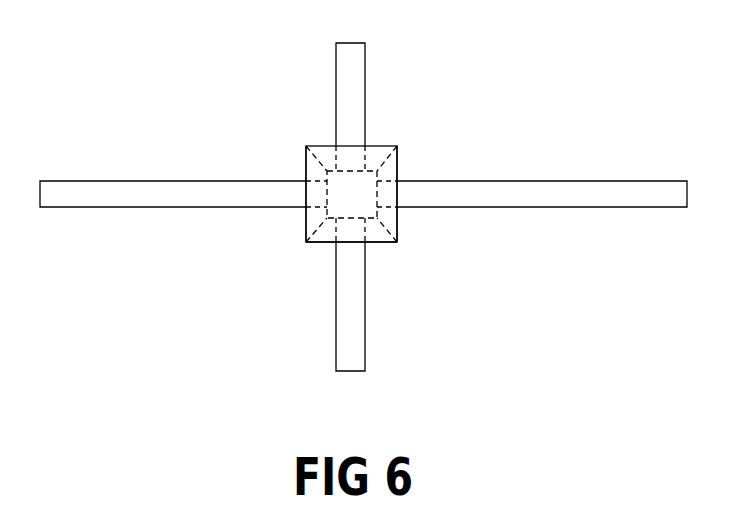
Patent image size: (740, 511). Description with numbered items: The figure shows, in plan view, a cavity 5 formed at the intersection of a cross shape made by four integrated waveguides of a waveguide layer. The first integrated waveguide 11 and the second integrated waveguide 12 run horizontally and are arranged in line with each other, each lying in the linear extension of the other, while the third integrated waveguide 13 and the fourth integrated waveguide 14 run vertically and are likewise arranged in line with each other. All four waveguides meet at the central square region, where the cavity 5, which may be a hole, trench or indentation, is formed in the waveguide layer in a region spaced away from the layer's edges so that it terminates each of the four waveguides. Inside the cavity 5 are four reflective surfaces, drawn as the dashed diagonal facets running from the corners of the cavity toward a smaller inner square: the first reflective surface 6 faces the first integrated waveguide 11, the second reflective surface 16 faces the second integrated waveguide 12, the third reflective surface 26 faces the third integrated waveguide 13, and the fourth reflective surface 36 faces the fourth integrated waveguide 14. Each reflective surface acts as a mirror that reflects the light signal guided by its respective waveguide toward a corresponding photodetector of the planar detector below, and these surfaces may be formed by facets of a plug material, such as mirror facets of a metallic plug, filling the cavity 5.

The cavity 5 is at (397, 146).
The reflective surface 6 is at (306, 170).
The first integrated waveguide 11 is at (132, 182).
The second integrated waveguide 12 is at (583, 181).
The third integrated waveguide 13 is at (336, 97).
The fourth integrated waveguide 14 is at (336, 323).
The second reflective surface 16 is at (397, 168).
The third reflective surface 26 is at (313, 145).
The fourth reflective surface 36 is at (375, 243).